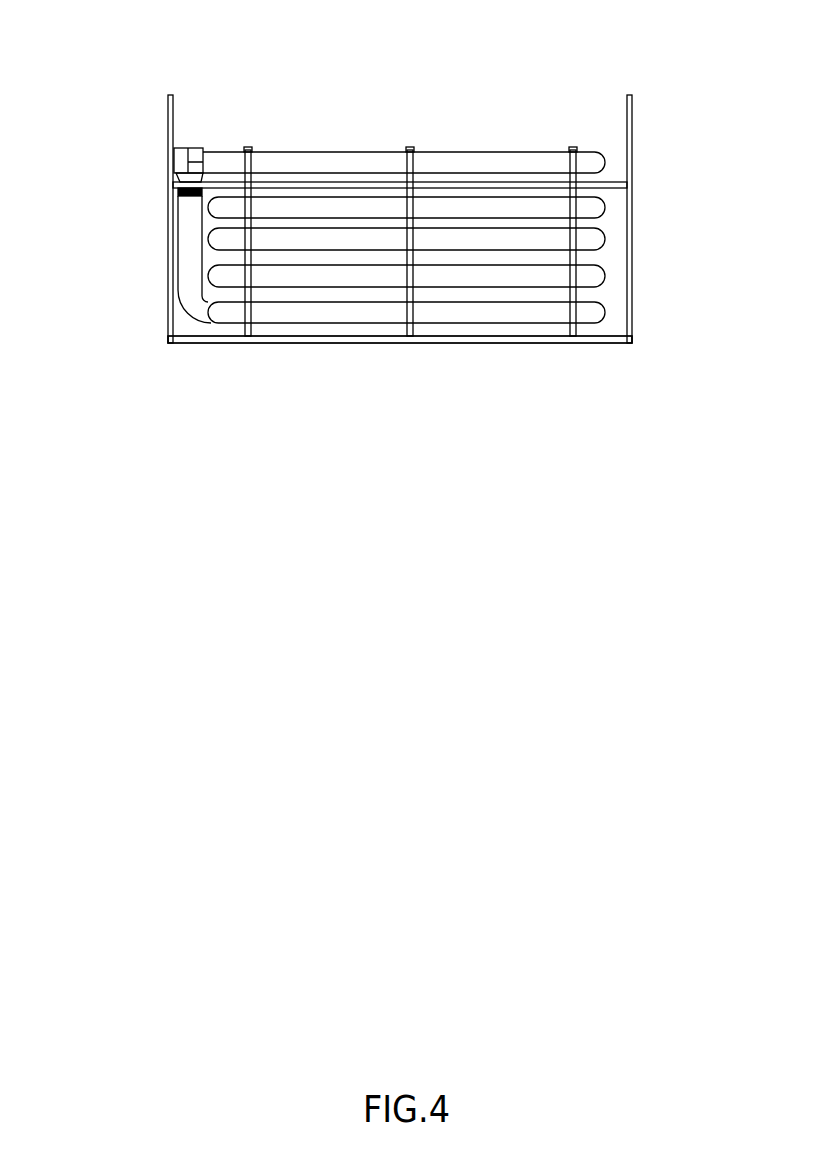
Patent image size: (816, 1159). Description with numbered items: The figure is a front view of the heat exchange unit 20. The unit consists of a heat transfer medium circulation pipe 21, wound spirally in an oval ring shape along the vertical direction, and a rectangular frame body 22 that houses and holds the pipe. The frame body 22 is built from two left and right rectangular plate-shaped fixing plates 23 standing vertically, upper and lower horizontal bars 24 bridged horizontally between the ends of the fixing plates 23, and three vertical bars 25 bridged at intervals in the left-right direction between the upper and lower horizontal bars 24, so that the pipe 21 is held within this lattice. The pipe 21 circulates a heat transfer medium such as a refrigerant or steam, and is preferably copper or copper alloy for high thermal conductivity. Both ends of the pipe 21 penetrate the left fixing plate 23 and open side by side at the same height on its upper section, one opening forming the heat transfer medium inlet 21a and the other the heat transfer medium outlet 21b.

The heat exchange unit 20 is at (480, 108).
The heat transfer medium circulation pipe 21 is at (493, 312).
The heat transfer medium inlet 21a is at (167, 152).
The heat transfer medium outlet 21b is at (167, 171).
The rectangular frame body 22 is at (338, 346).
The fixing plate 23 is at (168, 243).
The horizontal bar 24 is at (537, 182).
The vertical bar 25 is at (248, 146).